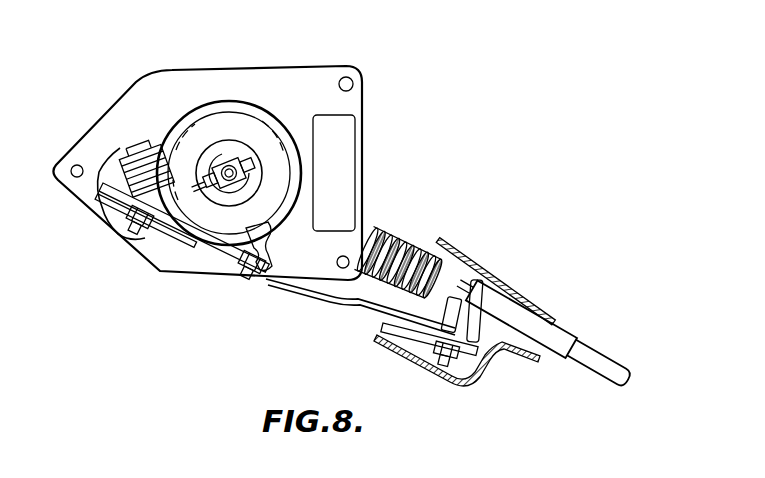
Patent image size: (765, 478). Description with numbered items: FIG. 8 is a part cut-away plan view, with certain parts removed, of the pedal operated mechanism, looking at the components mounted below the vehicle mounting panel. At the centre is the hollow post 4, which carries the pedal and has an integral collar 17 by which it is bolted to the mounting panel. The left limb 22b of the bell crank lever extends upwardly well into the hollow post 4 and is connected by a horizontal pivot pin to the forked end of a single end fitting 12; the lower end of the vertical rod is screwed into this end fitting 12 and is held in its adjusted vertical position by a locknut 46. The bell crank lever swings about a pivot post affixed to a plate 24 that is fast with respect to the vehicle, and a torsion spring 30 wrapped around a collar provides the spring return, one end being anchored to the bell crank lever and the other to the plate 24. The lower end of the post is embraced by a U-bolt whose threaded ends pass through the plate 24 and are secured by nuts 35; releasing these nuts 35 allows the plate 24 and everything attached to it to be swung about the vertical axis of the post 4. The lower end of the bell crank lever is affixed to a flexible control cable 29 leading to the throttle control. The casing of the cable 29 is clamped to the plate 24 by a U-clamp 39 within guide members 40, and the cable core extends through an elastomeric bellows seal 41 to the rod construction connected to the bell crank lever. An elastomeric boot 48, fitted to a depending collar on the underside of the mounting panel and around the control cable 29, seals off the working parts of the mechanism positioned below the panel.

The hollow post 4 is at (228, 121).
The end fitting 12 is at (218, 190).
The collar 17 is at (315, 73).
The limb of bell crank lever 22b is at (250, 186).
The plate 24 is at (333, 291).
The flexible control cable 29 is at (596, 370).
The torsion spring 30 is at (138, 160).
The nuts 35 is at (152, 232).
The U-clamp 39 is at (488, 288).
The guide members 40 is at (440, 318).
The elastomeric bellows seal 41 is at (397, 234).
The locknut 46 is at (240, 168).
The elastomeric boot 48 is at (456, 256).